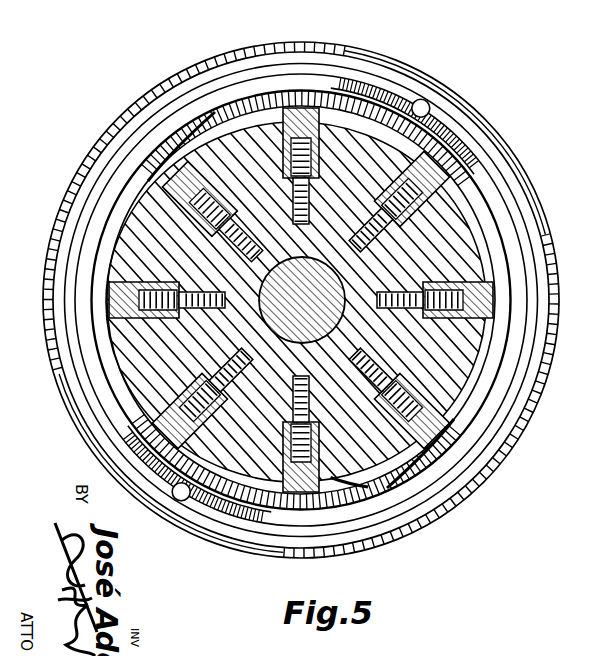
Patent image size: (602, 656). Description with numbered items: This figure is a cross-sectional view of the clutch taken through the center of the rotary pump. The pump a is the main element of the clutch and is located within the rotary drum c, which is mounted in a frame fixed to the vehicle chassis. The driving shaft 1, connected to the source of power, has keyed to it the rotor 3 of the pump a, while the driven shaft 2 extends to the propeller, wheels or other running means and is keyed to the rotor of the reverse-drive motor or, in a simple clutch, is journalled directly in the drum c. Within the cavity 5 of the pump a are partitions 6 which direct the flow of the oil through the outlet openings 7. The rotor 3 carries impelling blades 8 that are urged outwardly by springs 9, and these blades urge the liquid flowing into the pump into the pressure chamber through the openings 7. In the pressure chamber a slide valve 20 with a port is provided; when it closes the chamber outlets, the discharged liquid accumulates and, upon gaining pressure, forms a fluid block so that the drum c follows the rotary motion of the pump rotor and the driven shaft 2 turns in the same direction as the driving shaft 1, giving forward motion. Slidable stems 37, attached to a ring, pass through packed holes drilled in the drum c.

The driving shaft 1 is at (253, 318).
The driven shaft 2 is at (343, 283).
The rotor 3 is at (463, 247).
The cavity 5 is at (118, 345).
The partitions 6 is at (130, 213).
The outlet openings 7 is at (108, 246).
The impelling blades 8 is at (314, 102).
The springs 9 is at (298, 133).
The slide valve 20 is at (398, 100).
The stems 37 is at (431, 107).
The pump a is at (368, 478).
The rotary drum c is at (470, 482).